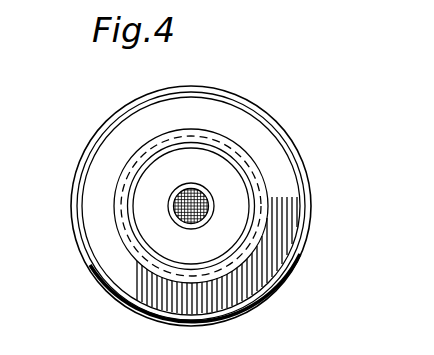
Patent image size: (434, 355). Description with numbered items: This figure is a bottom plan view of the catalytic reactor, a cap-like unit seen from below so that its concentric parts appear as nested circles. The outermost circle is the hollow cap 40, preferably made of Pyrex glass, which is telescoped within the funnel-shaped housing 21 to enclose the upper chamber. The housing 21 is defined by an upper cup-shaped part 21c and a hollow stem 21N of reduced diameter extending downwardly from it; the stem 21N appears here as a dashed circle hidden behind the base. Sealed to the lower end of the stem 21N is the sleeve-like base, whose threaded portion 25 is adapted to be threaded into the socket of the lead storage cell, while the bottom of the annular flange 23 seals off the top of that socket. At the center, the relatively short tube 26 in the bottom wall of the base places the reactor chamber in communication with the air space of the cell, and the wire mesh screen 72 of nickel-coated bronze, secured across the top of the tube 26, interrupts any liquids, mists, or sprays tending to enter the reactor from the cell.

The funnel-shaped housing 21 is at (228, 118).
The upper cup-shaped part 21c is at (305, 246).
The hollow stem 21N is at (122, 220).
The annular flange 23 is at (243, 150).
The threaded portion 25 is at (163, 258).
The short tube 26 is at (186, 229).
The wire mesh screen 72 is at (184, 183).
The hollow cap 40 is at (94, 138).